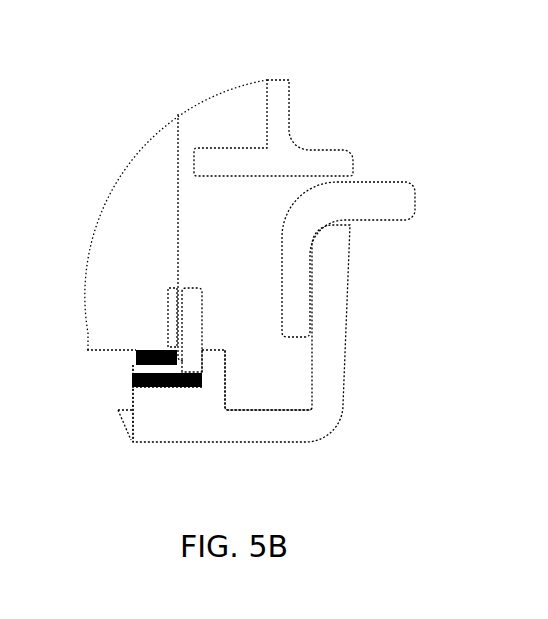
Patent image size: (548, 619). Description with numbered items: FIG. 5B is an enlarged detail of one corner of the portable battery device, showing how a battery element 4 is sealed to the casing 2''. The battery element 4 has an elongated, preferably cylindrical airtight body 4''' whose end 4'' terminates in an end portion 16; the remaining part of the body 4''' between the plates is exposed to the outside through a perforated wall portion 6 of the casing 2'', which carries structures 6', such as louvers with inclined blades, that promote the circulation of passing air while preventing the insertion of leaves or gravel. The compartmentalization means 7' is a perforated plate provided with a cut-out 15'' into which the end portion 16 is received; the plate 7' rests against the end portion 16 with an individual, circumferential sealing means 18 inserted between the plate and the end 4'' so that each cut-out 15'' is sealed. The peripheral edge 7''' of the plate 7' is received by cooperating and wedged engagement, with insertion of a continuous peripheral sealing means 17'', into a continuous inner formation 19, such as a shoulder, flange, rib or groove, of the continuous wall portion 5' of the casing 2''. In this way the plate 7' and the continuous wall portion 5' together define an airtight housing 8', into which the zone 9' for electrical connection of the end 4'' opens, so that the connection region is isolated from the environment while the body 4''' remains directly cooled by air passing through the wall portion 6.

The battery element 4 is at (160, 202).
The elongated airtight body 4''' is at (160, 202).
The perforated wall portion 6 is at (288, 102).
The structure promoting air circulation 6' is at (288, 102).
The compartmentalization means 7' is at (293, 274).
The peripheral edge 7''' is at (305, 259).
The casing 2'' is at (241, 358).
The continuous wall portion 5' is at (241, 358).
The zone for electrical connection 9' is at (85, 377).
The end of battery element 4'' is at (75, 399).
The individual sealing means 18 is at (140, 350).
The cut-out 15'' is at (112, 434).
The continuous peripheral sealing means 17'' is at (184, 443).
The airtight housing 8' is at (141, 432).
The end portion 16 is at (168, 317).
The continuous inner formation 19 is at (215, 372).